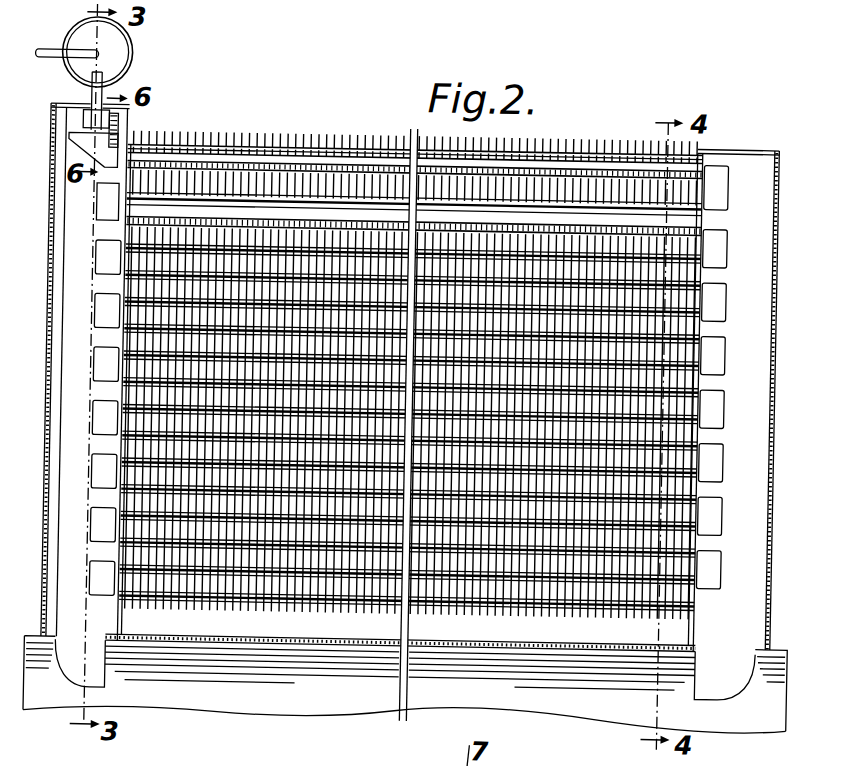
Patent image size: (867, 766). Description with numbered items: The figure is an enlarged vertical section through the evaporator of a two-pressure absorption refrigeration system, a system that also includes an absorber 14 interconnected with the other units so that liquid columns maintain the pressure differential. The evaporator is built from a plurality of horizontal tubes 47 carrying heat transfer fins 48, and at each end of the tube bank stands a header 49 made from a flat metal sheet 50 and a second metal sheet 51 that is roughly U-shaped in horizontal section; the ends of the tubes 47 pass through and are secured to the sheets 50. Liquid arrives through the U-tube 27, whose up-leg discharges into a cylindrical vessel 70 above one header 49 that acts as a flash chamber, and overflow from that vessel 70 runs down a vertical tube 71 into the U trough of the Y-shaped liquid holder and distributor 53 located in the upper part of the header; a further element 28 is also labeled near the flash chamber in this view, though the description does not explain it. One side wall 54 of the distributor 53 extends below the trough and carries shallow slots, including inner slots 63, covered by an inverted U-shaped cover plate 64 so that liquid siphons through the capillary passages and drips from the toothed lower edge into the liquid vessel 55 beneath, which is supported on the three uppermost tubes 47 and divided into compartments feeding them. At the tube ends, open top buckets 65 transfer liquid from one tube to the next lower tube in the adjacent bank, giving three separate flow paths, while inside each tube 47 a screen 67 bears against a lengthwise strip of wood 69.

The absorber 14 is at (33, 643).
The U-tube 27 is at (54, 56).
The header drum 28 is at (66, 30).
The horizontal tubes 47 is at (279, 138).
The heat transfer fins 48 is at (357, 150).
The header 49 is at (86, 370).
The flat metal sheet 50 is at (122, 635).
The second metal sheet 51 is at (46, 512).
The liquid holder and distributor 53 is at (78, 118).
The side wall 54 is at (112, 142).
The liquid vessel 55 is at (72, 160).
The slots 63 is at (375, 447).
The cover plate 64 is at (440, 447).
The buckets 65 is at (93, 412).
The screens 67 is at (566, 158).
The strip of wood 69 is at (517, 166).
The cylindrical vessel 70 is at (125, 48).
The vertical tube 71 is at (99, 82).